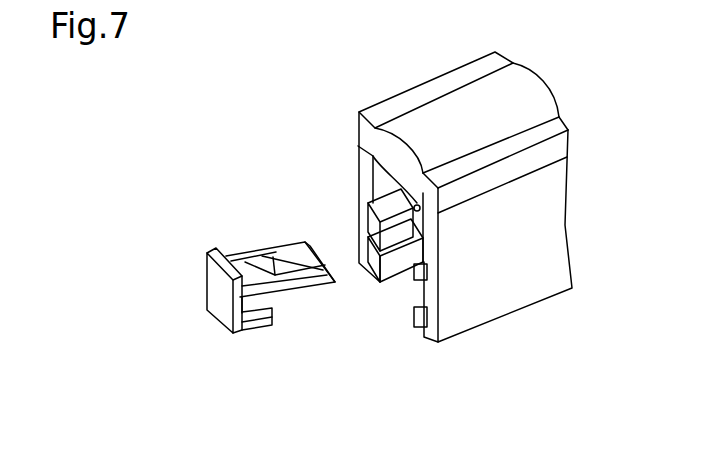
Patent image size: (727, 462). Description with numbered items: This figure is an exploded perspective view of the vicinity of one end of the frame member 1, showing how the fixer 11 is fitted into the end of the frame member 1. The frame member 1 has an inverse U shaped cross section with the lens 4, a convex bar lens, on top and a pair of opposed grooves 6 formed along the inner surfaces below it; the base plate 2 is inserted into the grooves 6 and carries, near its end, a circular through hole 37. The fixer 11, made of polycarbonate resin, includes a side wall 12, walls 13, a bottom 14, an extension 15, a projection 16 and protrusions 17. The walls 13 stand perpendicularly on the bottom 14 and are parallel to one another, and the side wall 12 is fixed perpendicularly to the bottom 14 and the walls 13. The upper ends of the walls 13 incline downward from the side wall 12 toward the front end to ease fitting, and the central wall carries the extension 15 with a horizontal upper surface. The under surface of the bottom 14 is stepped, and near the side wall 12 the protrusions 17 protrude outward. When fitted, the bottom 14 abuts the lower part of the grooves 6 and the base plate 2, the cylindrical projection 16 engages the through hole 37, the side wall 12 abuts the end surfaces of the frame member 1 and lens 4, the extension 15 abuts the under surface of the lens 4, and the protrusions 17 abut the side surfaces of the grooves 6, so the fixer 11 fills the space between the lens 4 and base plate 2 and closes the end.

The frame member 1 is at (349, 121).
The base plate 2 is at (412, 226).
The lens 4 is at (468, 95).
The grooves 6 is at (420, 266).
The fixer 11 is at (197, 325).
The side wall 12 is at (218, 293).
The walls 13 is at (275, 298).
The bottom 14 is at (272, 328).
The extension 15 is at (257, 257).
The projection 16 is at (307, 296).
The protrusions 17 is at (252, 330).
The through hole 37 is at (414, 203).